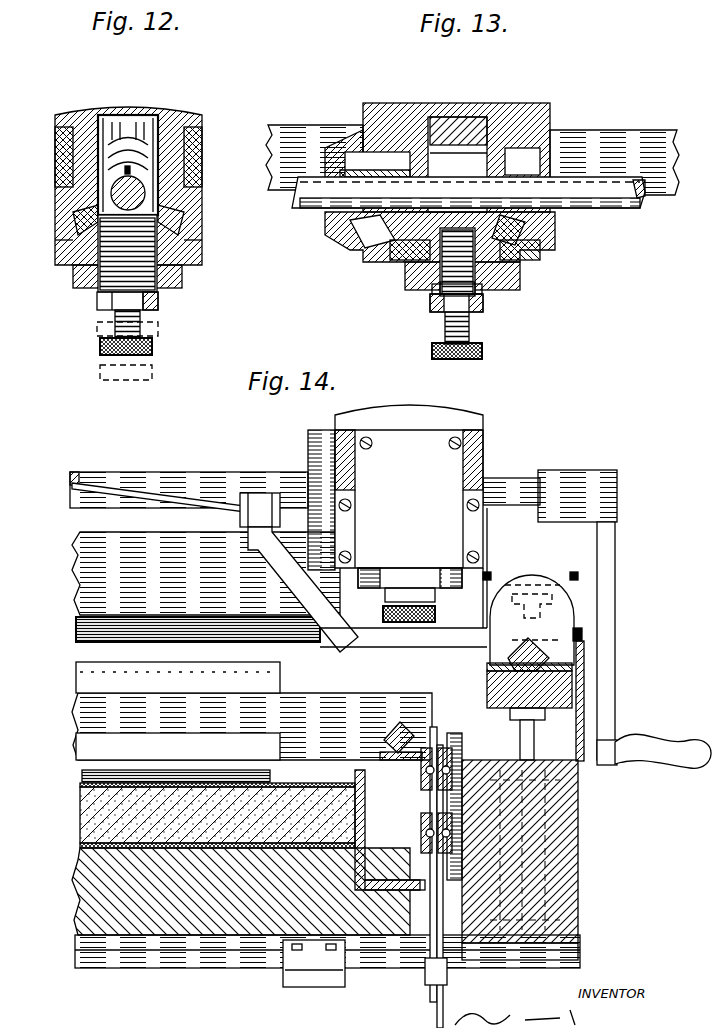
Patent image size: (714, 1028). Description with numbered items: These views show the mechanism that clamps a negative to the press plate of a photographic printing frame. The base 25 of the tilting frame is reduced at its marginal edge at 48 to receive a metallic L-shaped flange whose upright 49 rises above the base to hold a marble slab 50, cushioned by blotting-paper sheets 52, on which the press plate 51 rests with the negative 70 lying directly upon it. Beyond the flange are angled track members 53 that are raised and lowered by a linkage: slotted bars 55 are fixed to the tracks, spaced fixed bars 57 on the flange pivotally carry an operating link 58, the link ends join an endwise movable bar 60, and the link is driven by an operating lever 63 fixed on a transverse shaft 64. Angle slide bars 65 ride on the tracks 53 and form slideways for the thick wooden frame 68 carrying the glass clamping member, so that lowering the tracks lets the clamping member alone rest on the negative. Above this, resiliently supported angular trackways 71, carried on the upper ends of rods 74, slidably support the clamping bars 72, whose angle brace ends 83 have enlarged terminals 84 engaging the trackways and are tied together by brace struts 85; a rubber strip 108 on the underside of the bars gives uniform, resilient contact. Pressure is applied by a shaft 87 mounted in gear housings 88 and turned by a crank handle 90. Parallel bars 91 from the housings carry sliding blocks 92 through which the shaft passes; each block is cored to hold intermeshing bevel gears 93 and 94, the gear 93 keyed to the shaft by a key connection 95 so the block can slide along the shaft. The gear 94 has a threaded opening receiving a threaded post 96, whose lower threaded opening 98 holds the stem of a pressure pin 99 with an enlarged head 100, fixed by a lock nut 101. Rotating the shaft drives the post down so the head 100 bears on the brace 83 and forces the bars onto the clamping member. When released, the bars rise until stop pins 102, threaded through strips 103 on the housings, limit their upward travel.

In FIG. 14, the base 25 is at (92, 893).
In FIG. 14, the reduced marginal edge 48 is at (384, 892).
In FIG. 14, the upright of L-shaped flange 49 is at (387, 830).
In FIG. 14, the slab 50 is at (85, 810).
In FIG. 14, the press plate 51 is at (300, 784).
In FIG. 14, the cushioning sheets 52 is at (82, 845).
In FIG. 14, the track members 53 is at (385, 742).
In FIG. 14, the bars 55 is at (448, 762).
In FIG. 14, the fixed bars 57 is at (430, 845).
In FIG. 14, the operating link 58 is at (430, 800).
In FIG. 14, the endwise movable bar 60 is at (443, 742).
In FIG. 14, the operating lever 63 is at (436, 1003).
In FIG. 14, the shaft 64 is at (216, 965).
In FIG. 14, the slide bars 65 is at (310, 710).
In FIG. 14, the frame 68 is at (90, 676).
In FIG. 14, the negative 70 is at (88, 774).
In FIG. 14, the trackways 71 is at (548, 658).
In FIG. 14, the clamping bars 72 is at (206, 573).
In FIG. 14, the rods 74 is at (536, 735).
In FIG. 14, the angle brace bar ends 83 is at (348, 640).
In FIG. 14, the enlarged terminals 84 is at (556, 604).
In FIG. 14, the brace struts 85 is at (128, 492).
In FIG. 12, the shaft 87 is at (100, 190).
In FIG. 13, the shaft 87 is at (300, 192).
In FIG. 14, the shaft 87 is at (206, 478).
In FIG. 13, the gear housings 88 is at (472, 160).
In FIG. 14, the gear housings 88 is at (320, 478).
In FIG. 14, the crank handle 90 is at (614, 678).
In FIG. 12, the parallel bars 91 is at (58, 156).
In FIG. 12, the blocks 92 is at (178, 118).
In FIG. 13, the blocks 92 is at (508, 122).
In FIG. 14, the blocks 92 is at (455, 420).
In FIG. 12, the bevel gear 93 is at (108, 120).
In FIG. 13, the bevel gear 93 is at (385, 224).
In FIG. 12, the bevel gear 94 is at (74, 278).
In FIG. 13, the bevel gear 94 is at (406, 279).
In FIG. 12, the key connection 95 is at (142, 160).
In FIG. 13, the key connection 95 is at (360, 172).
In FIG. 12, the threaded post 96 is at (100, 294).
In FIG. 13, the threaded post 96 is at (442, 292).
In FIG. 14, the threaded post 96 is at (410, 585).
In FIG. 12, the threaded opening 98 is at (142, 321).
In FIG. 13, the threaded opening 98 is at (472, 288).
In FIG. 12, the pressure pin 99 is at (127, 253).
In FIG. 13, the pressure pin 99 is at (470, 330).
In FIG. 12, the enlarged head 100 is at (153, 347).
In FIG. 13, the enlarged head 100 is at (483, 352).
In FIG. 14, the enlarged head 100 is at (405, 624).
In FIG. 12, the lock nut 101 is at (98, 312).
In FIG. 13, the lock nut 101 is at (432, 314).
In FIG. 14, the stop pins 102 is at (556, 572).
In FIG. 14, the strips 103 is at (583, 633).
In FIG. 14, the rubber strip 108 is at (76, 630).